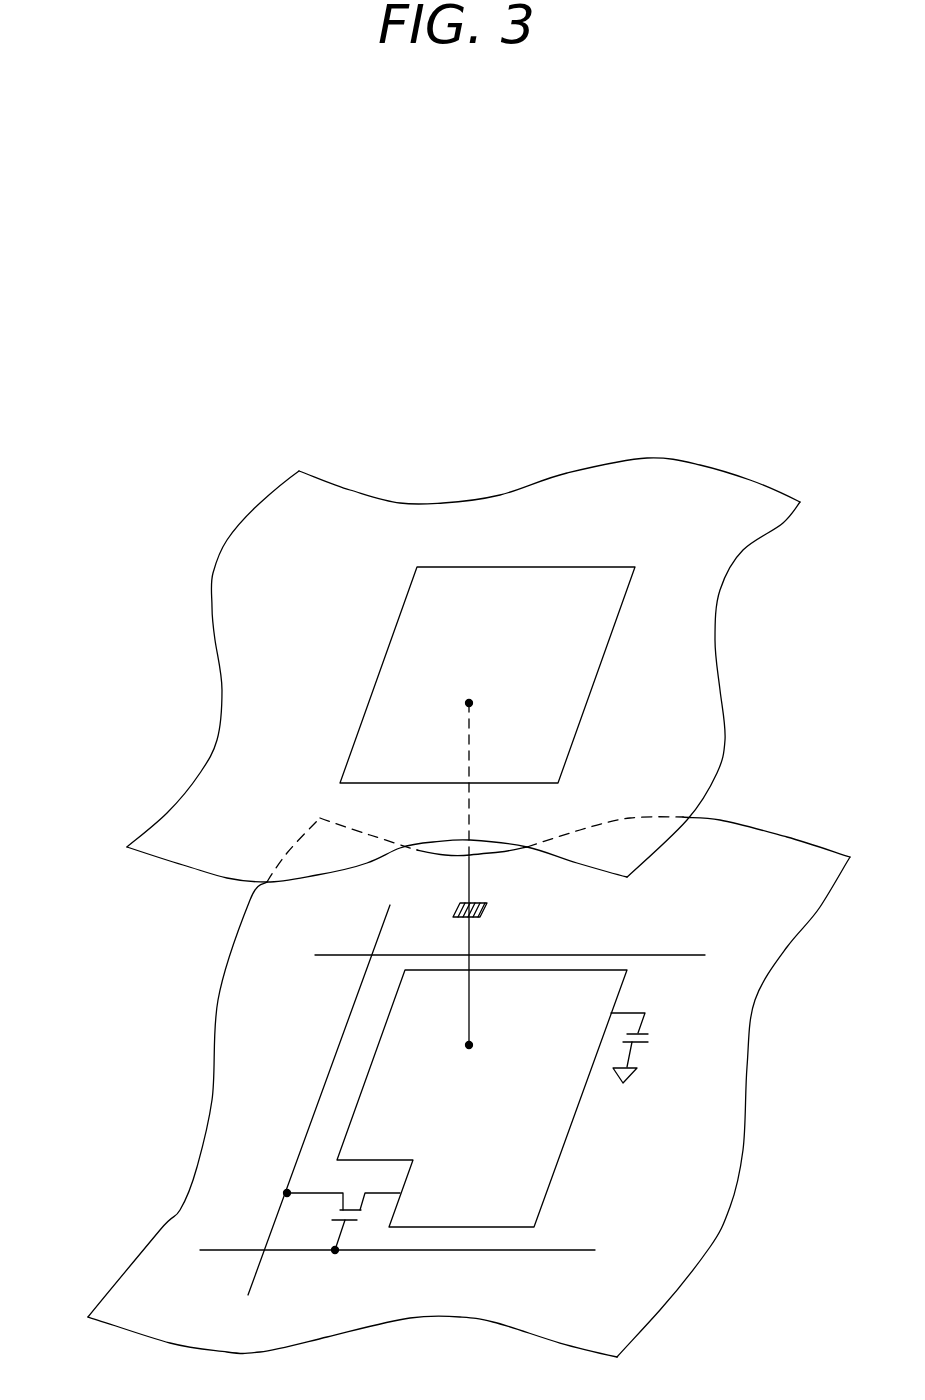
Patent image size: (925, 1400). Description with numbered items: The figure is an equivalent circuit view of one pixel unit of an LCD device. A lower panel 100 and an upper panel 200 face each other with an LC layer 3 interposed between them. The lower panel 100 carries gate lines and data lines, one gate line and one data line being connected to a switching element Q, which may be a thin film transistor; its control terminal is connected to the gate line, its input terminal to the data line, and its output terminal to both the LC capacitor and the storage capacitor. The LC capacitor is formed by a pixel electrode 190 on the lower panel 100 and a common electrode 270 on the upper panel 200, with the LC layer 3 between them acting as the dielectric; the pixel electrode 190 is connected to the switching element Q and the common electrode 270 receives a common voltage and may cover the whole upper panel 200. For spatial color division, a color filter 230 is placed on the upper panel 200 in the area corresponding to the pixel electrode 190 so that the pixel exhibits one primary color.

The LC layer 3 is at (104, 967).
The lower panel 100 is at (772, 1063).
The pixel electrode 190 is at (560, 1155).
The upper panel 200 is at (490, 670).
The color filter 230 is at (595, 692).
The common electrode 270 is at (716, 639).